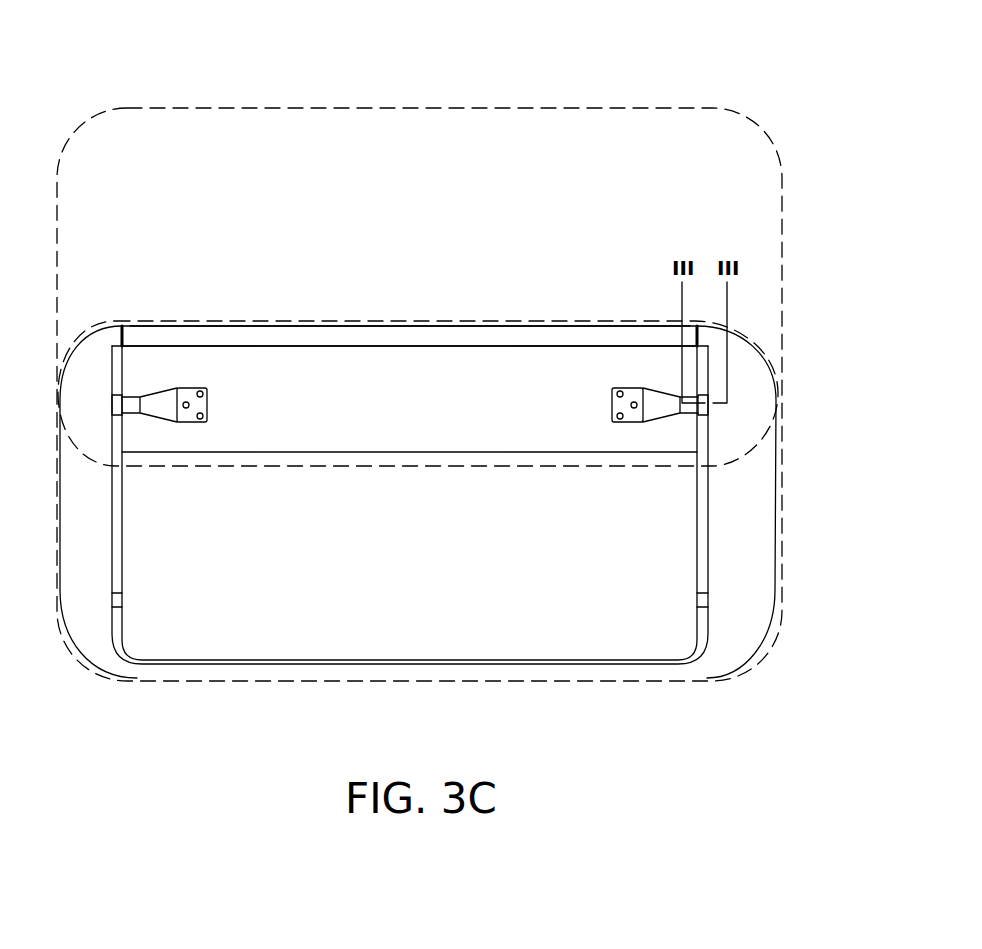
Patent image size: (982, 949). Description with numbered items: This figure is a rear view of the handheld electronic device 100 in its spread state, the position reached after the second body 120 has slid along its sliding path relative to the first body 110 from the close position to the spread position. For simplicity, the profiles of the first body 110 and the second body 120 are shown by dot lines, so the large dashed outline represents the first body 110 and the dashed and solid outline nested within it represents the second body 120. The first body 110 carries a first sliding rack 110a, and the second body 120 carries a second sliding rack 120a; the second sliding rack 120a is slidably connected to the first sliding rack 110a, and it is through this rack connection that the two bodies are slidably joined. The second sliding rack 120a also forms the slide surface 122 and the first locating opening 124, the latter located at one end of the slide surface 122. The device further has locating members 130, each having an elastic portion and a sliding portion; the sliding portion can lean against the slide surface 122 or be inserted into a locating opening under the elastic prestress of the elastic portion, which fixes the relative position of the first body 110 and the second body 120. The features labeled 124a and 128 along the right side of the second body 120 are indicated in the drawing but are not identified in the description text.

The handheld electronic device 100 is at (765, 57).
The first body 110 is at (762, 133).
The first sliding rack 110a is at (415, 393).
The second body 120 is at (758, 652).
The second sliding rack 120a is at (480, 335).
The slide surface 122 is at (702, 502).
The first locating opening 124 is at (706, 595).
The frame edge 124a is at (702, 605).
The gap 128 is at (700, 530).
The locating member 130 is at (658, 412).